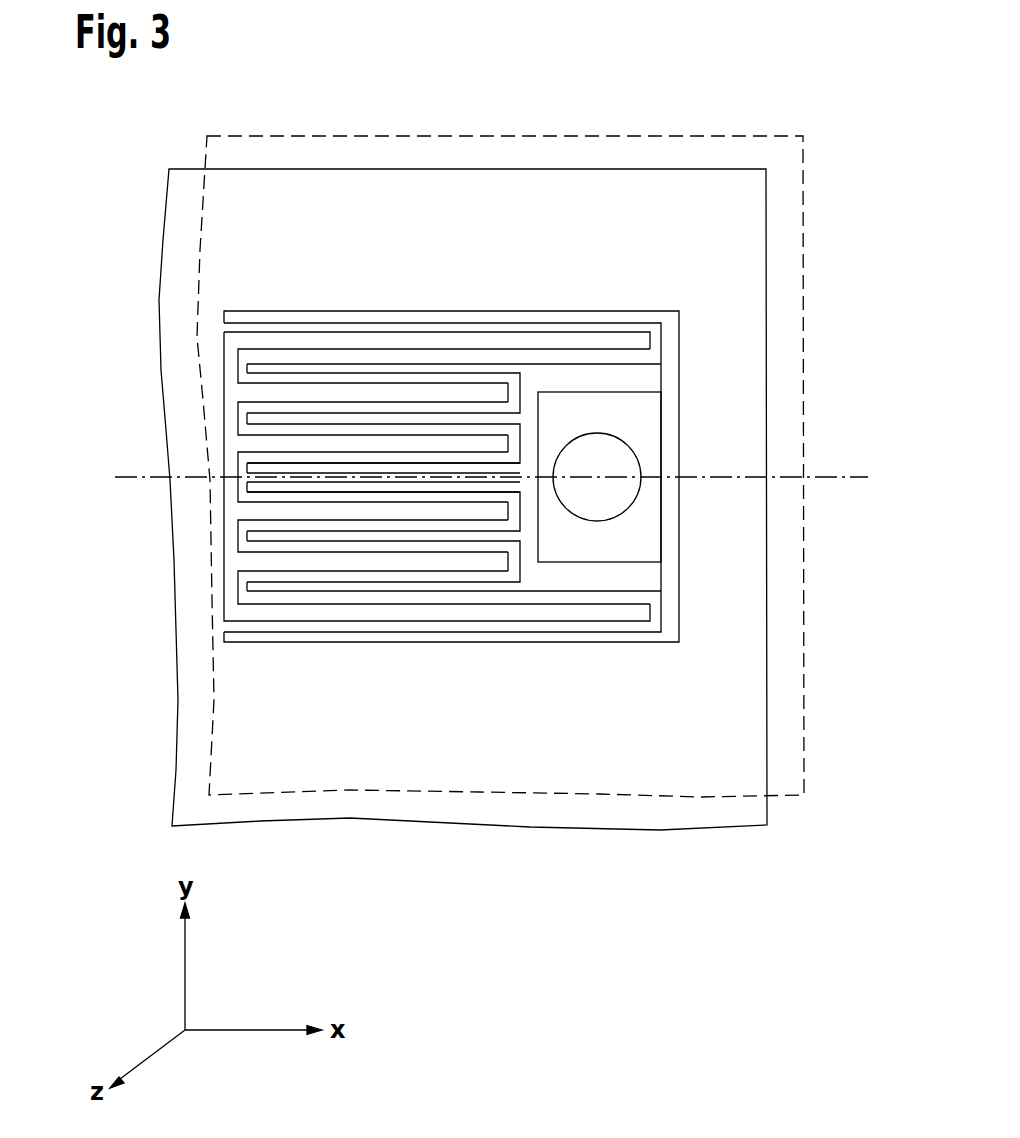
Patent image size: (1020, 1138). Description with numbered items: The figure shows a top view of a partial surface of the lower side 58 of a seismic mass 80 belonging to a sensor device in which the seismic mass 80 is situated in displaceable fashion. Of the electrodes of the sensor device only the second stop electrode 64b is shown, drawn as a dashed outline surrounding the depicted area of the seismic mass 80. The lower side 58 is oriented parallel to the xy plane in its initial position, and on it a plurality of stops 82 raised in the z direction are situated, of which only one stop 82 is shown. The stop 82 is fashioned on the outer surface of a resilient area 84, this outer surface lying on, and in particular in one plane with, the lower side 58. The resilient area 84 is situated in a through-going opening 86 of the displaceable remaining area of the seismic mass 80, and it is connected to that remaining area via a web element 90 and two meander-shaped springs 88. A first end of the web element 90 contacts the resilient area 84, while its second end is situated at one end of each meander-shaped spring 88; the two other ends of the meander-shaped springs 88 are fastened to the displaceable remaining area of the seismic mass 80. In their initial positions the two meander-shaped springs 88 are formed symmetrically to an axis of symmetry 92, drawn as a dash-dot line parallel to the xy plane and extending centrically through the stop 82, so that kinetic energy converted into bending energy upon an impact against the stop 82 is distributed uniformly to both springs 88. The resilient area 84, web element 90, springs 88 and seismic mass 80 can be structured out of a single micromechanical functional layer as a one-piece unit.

The seismic mass 80 is at (517, 536).
The lower side 58 is at (734, 252).
The second stop electrode 64b is at (788, 168).
The meander-shaped springs 88 is at (653, 345).
The web element 90 is at (285, 478).
The axis of symmetry 92 is at (832, 478).
The resilient area 84 is at (640, 419).
The stop 82 is at (635, 507).
The through-going opening 86 is at (655, 575).